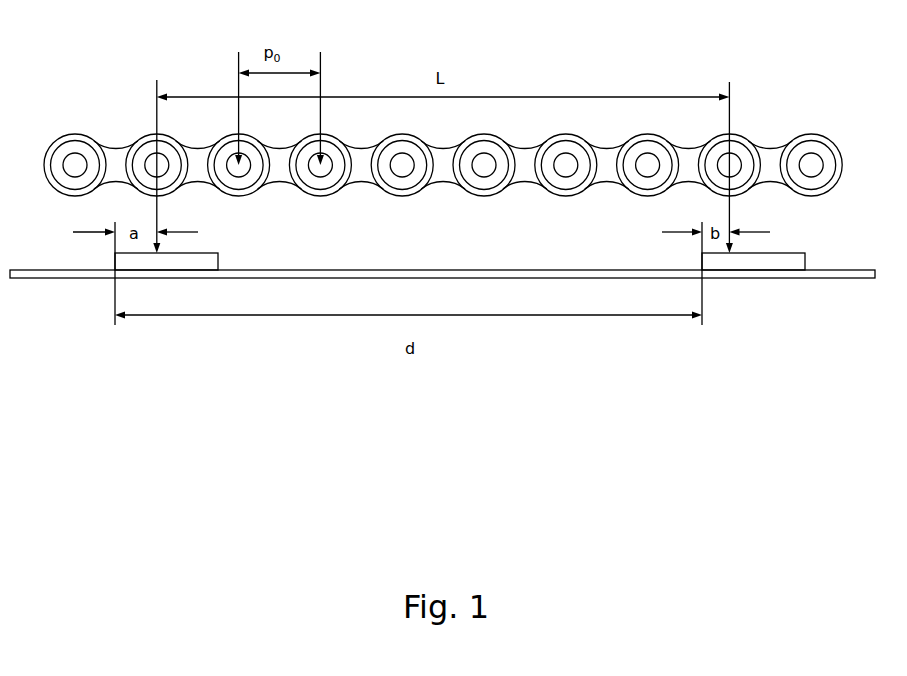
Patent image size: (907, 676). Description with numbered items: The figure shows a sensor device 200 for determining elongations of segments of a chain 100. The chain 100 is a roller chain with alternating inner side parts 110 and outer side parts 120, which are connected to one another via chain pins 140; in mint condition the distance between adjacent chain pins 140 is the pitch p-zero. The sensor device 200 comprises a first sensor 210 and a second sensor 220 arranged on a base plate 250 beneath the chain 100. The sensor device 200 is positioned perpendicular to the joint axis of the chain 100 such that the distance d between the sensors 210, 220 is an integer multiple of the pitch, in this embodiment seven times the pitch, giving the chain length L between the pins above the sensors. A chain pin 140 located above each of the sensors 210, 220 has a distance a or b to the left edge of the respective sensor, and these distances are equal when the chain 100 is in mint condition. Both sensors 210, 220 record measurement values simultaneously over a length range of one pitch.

The chain 100 is at (108, 108).
The inner side part 110 is at (523, 177).
The outer side part 120 is at (278, 177).
The chain pin 140 is at (483, 165).
The sensor device 200 is at (510, 347).
The first sensor 210 is at (152, 262).
The second sensor 220 is at (752, 263).
The base plate 250 is at (838, 275).